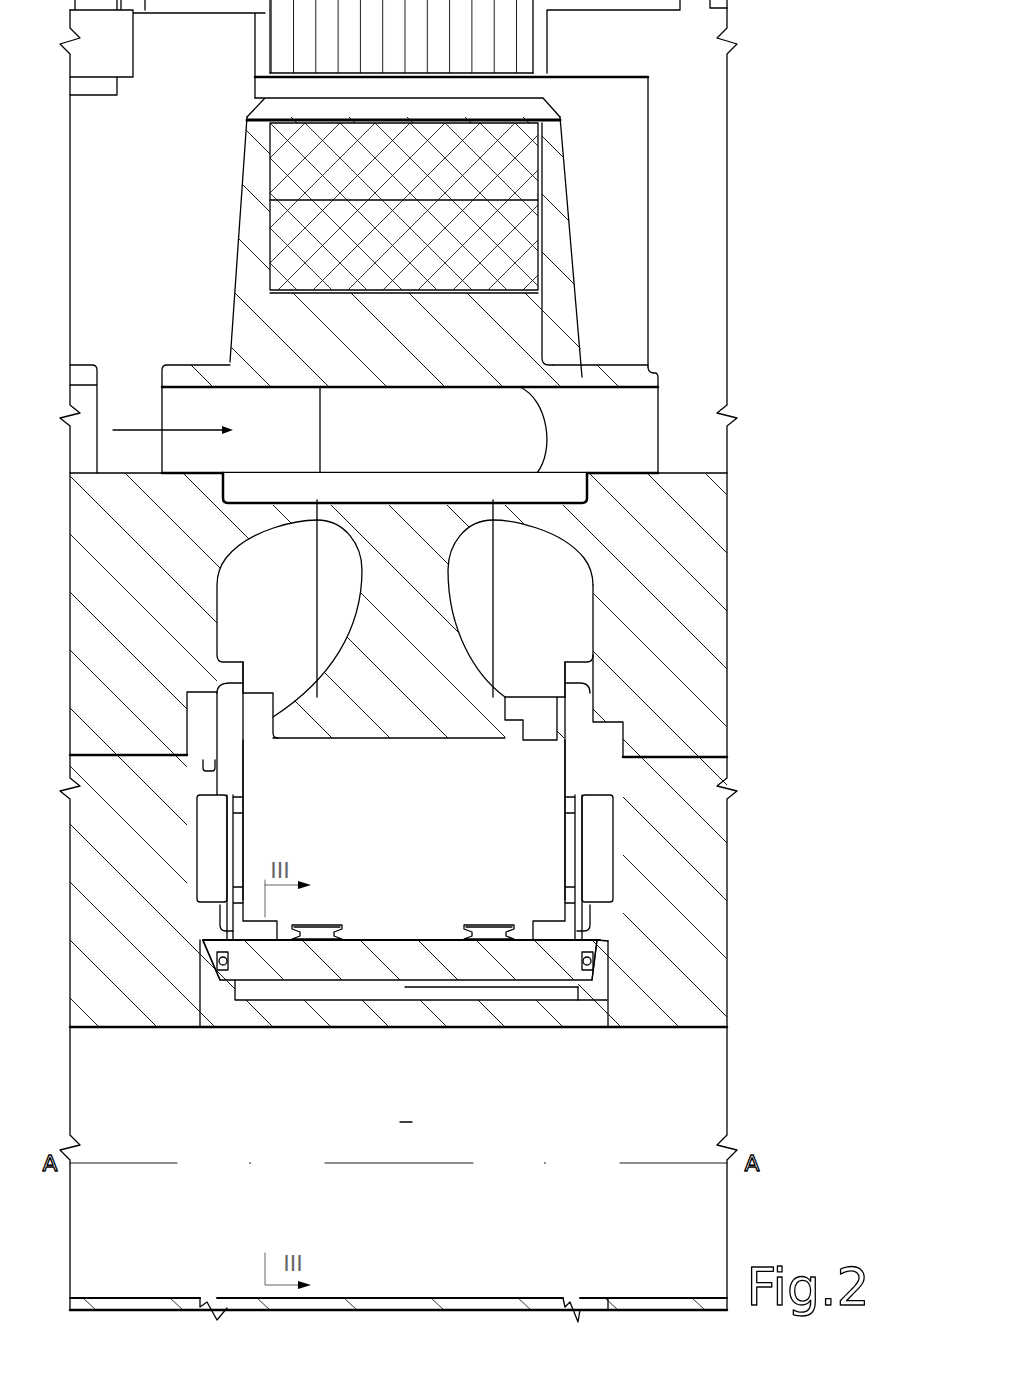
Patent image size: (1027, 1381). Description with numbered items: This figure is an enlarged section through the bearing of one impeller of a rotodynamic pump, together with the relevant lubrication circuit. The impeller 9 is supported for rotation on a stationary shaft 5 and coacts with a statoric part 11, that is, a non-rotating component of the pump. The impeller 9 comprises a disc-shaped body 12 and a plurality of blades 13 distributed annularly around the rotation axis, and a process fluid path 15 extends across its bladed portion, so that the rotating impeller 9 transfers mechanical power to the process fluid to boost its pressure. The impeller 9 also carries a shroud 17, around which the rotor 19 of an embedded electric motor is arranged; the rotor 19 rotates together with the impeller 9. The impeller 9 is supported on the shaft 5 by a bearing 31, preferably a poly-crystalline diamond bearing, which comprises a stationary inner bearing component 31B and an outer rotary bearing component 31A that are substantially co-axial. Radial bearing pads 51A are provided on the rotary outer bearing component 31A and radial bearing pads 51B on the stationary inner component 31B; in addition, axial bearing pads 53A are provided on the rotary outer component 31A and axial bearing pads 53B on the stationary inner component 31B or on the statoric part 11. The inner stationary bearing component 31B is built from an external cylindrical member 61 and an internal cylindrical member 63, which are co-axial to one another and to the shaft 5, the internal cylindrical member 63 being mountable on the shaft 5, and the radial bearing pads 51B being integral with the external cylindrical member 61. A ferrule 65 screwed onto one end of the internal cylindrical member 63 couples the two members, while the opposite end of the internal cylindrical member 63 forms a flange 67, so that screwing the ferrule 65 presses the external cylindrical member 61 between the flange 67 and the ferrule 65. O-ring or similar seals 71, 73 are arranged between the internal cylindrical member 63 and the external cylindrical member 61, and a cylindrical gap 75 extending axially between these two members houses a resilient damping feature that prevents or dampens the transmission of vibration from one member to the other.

The stationary shaft 5 is at (406, 1109).
The impeller 9 is at (210, 347).
The statoric part 11 is at (103, 613).
The disc-shaped body 12 is at (455, 687).
The blades 13 is at (543, 407).
The process fluid path 15 is at (147, 430).
The shroud 17 is at (580, 378).
The rotor 19 is at (517, 220).
The bearing 31 is at (540, 910).
The outer rotary bearing component 31A is at (527, 860).
The stationary inner bearing component 31B is at (620, 964).
The radial bearing pads 51A is at (317, 923).
The radial bearing pads 51B is at (307, 942).
The axial bearing pads 53A is at (237, 847).
The axial bearing pads 53B is at (208, 840).
The external cylindrical member 61 is at (325, 970).
The internal cylindrical member 63 is at (242, 1017).
The ferrule 65 is at (603, 988).
The flange 67 is at (203, 953).
The seal 71 is at (588, 960).
The seal 73 is at (217, 960).
The cylindrical gap 75 is at (428, 988).